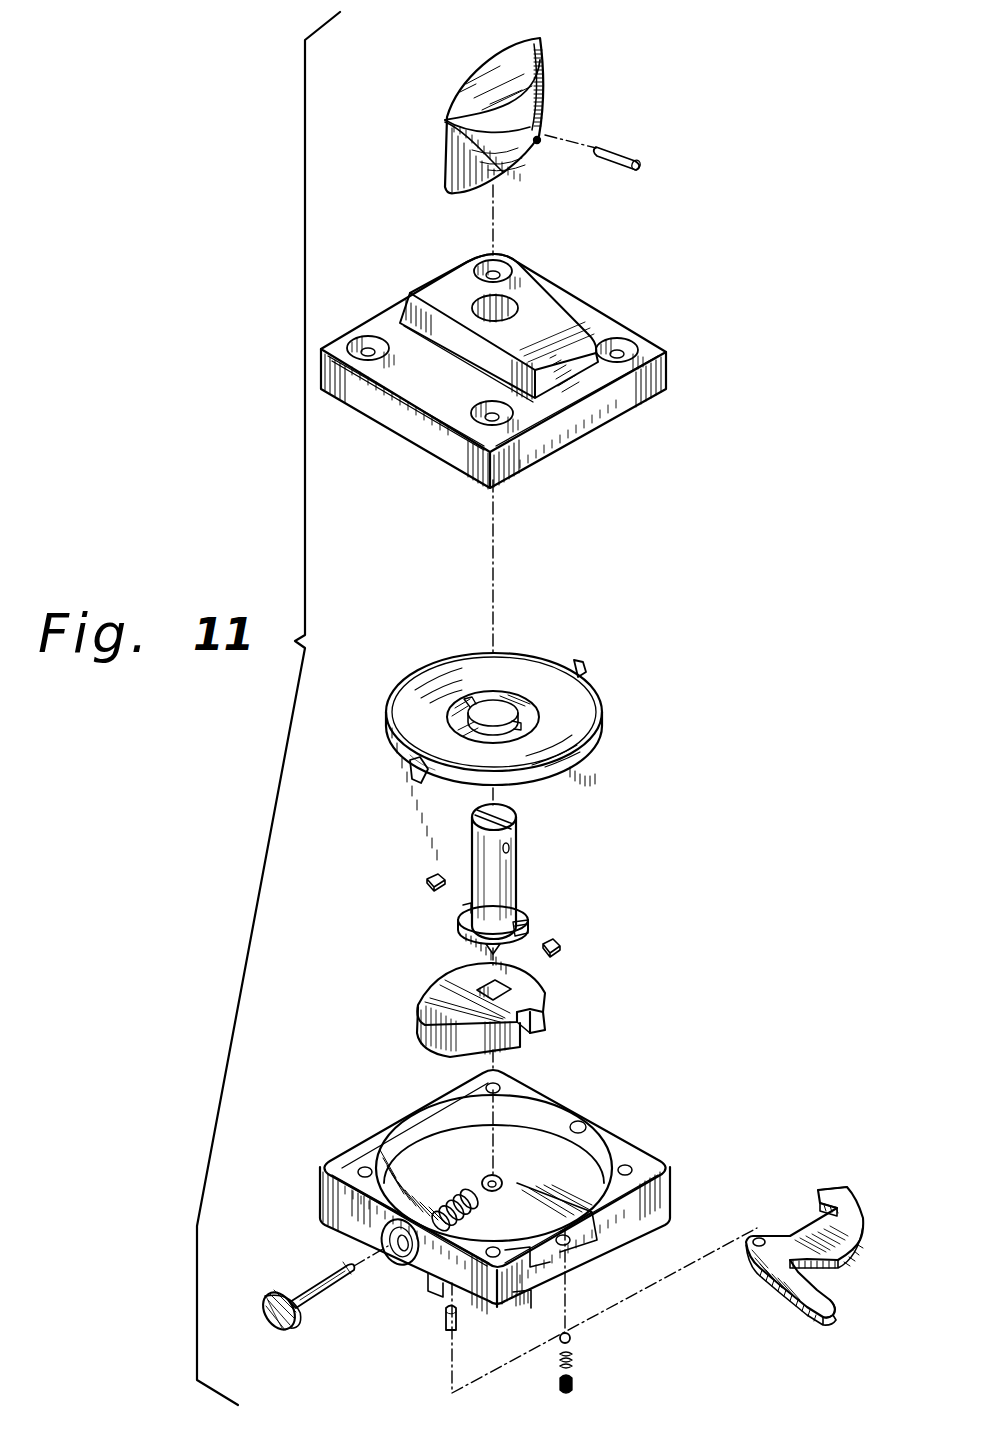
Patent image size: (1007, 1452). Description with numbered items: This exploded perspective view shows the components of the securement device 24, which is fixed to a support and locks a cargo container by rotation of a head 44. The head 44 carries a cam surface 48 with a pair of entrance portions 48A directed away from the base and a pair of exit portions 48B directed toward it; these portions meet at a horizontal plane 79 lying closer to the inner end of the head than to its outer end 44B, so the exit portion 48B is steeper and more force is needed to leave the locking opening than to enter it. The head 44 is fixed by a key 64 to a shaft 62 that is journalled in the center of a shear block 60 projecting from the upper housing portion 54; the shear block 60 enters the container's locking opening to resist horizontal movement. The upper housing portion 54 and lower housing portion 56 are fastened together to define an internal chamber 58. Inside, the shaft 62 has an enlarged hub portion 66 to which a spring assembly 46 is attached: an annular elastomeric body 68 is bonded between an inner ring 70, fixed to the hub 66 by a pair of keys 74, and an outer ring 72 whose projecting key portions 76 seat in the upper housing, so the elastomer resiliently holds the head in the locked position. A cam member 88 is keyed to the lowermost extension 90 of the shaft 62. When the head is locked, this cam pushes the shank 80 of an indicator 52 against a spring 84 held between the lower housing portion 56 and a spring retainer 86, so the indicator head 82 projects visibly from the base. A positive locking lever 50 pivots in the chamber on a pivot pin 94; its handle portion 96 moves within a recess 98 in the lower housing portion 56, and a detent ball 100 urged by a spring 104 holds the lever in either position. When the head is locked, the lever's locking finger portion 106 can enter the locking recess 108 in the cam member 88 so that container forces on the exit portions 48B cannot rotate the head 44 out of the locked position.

The securement device 24 is at (651, 1065).
The head 44 is at (543, 72).
The outer end of head 44B is at (497, 66).
The spring assembly 46 is at (508, 729).
The cam surface 48 is at (447, 160).
The entrance portions of cam surface 48A is at (450, 120).
The exit portions of cam surface 48B is at (513, 165).
The positive locking lever 50 is at (840, 1243).
The indicator 52 is at (300, 1328).
The upper housing portion 54 is at (670, 355).
The lower housing portion 56 is at (521, 1214).
The internal chamber 58 is at (590, 1135).
The shear block 60 is at (560, 318).
The shaft 62 is at (520, 853).
The key 64 is at (620, 146).
The hub portion 66 is at (460, 922).
The elastomeric body 68 is at (548, 683).
The inner ring 70 is at (460, 716).
The outer ring 72 is at (553, 777).
The keys 74 is at (425, 879).
The key portions 76 is at (586, 668).
The horizontal plane 79 is at (541, 142).
The shank 80 is at (318, 1292).
The indicator head 82 is at (270, 1298).
The spring 84 is at (440, 1200).
The spring retainer 86 is at (487, 1176).
The cam member 88 is at (433, 1007).
The lowermost extension of shaft 90 is at (480, 955).
The pivot pin 94 is at (445, 1318).
The handle portion 96 is at (833, 1310).
The recess 98 is at (516, 1302).
The detent ball 100 is at (571, 1338).
The spring 104 is at (575, 1362).
The locking finger portion 106 is at (827, 1188).
The locking recess 108 is at (530, 1030).